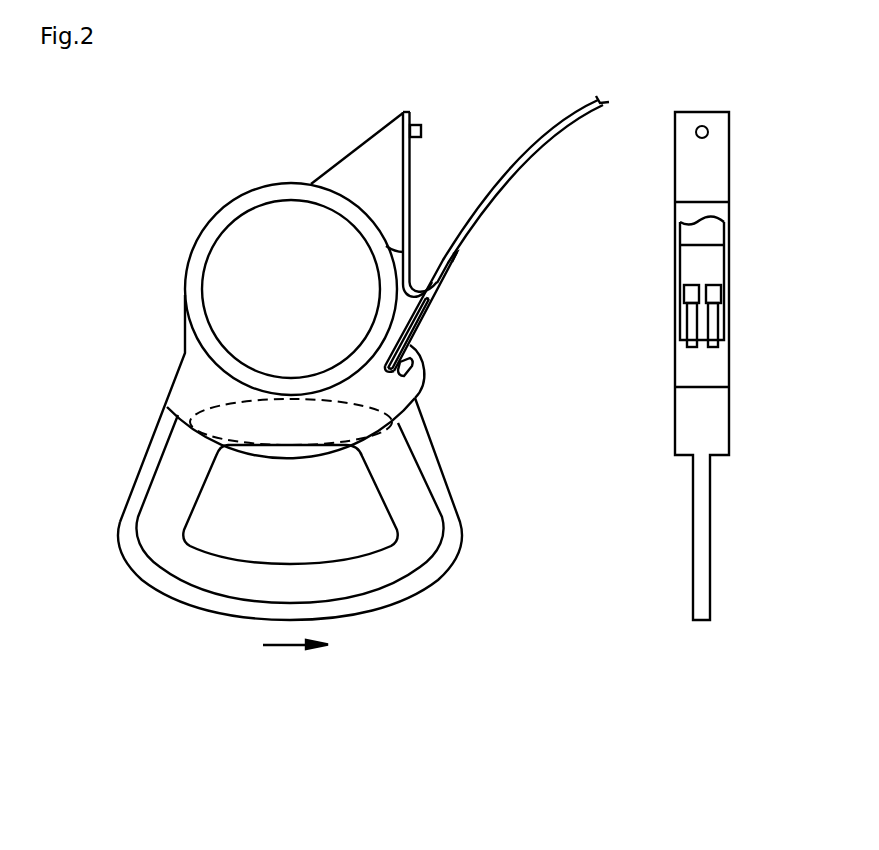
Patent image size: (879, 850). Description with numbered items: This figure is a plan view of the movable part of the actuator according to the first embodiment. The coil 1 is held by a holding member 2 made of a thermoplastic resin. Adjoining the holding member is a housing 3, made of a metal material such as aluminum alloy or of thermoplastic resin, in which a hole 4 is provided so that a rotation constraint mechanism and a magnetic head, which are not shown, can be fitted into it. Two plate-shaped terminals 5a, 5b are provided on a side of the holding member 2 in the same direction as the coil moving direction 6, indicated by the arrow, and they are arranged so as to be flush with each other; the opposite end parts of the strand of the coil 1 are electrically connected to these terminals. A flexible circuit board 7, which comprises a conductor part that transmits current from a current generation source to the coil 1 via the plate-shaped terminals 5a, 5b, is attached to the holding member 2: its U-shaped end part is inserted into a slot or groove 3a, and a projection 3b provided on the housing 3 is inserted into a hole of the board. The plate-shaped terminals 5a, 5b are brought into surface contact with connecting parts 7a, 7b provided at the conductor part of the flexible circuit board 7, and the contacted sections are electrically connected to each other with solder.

The coil 1 is at (422, 493).
The holding member 2 is at (183, 382).
The housing 3 is at (208, 232).
The slot or groove 3a is at (402, 374).
The projection 3b is at (422, 130).
The hole 4 is at (285, 252).
The plate-shaped terminal 5a is at (424, 328).
The plate-shaped terminal 5b is at (717, 330).
The coil moving direction 6 is at (295, 660).
The flexible circuit board 7 is at (528, 150).
The connecting part 7a is at (433, 302).
The connecting part 7b is at (718, 295).